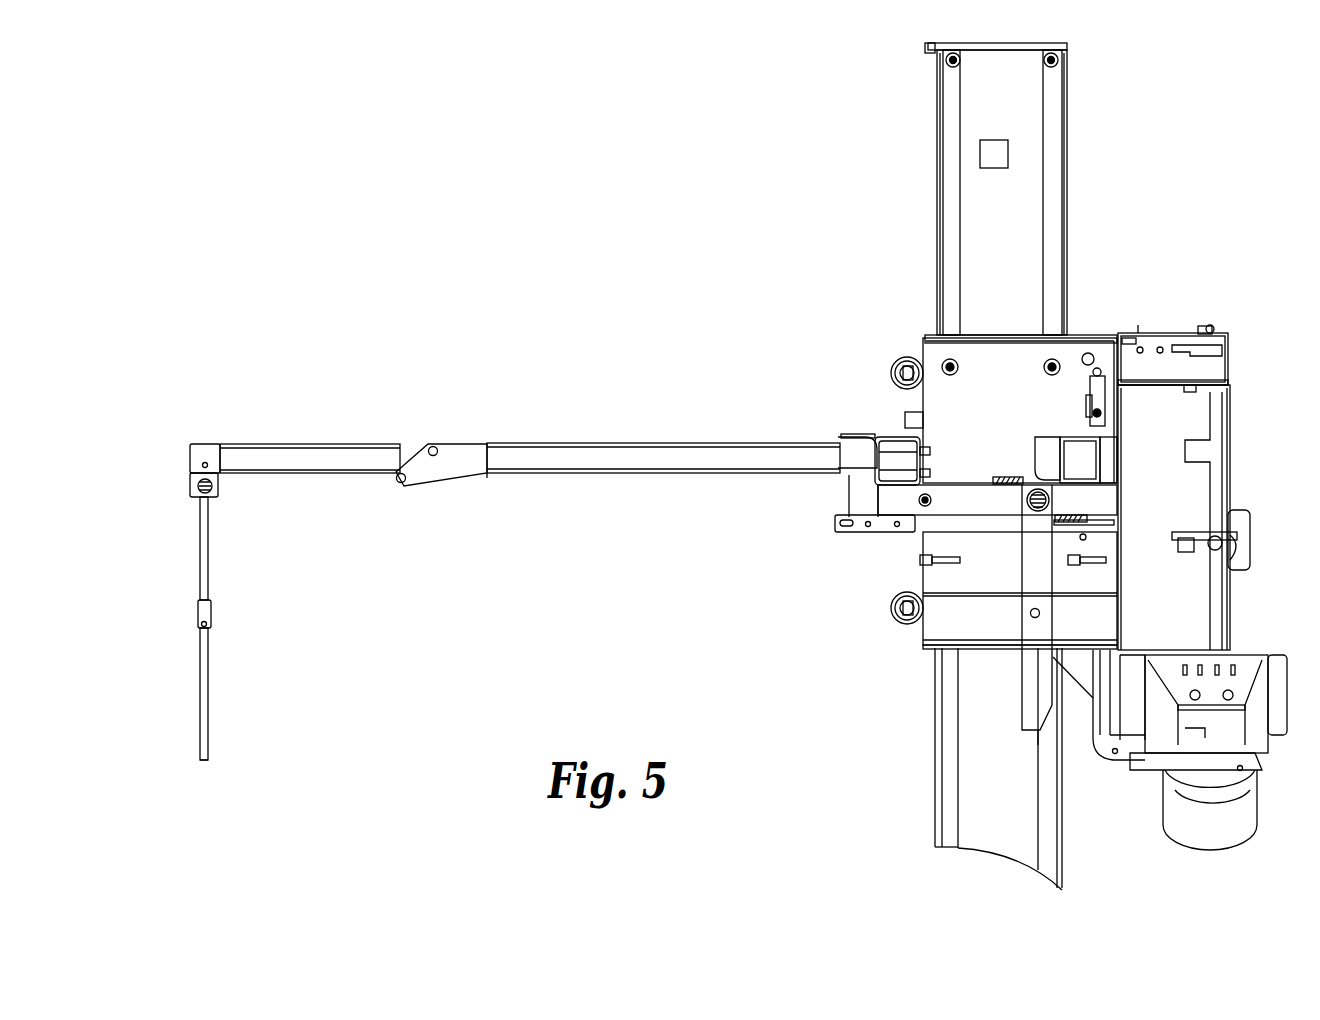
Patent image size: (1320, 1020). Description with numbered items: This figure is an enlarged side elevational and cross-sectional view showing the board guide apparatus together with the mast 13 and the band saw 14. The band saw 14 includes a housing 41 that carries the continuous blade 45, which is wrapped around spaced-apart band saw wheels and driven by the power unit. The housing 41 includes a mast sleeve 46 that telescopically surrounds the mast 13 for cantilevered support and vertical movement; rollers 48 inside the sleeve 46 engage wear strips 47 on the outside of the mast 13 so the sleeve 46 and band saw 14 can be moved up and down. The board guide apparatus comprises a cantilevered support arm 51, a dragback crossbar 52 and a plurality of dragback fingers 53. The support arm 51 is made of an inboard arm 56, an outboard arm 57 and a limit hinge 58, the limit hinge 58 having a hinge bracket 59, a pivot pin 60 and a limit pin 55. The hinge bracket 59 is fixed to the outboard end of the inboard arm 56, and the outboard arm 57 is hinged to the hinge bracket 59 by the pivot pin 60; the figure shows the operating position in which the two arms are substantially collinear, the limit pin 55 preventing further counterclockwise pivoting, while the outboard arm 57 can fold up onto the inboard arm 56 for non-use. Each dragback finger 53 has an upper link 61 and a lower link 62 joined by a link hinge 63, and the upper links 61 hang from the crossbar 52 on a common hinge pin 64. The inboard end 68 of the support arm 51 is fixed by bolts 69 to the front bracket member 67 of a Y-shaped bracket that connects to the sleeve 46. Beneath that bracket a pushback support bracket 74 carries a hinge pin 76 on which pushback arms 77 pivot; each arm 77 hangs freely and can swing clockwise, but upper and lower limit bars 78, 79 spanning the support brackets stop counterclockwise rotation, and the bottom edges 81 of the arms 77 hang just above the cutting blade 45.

The mast 13 is at (1068, 155).
The band saw 14 is at (1232, 340).
The housing 41 is at (1232, 424).
The continuous blade 45 is at (1150, 752).
The mast sleeve 46 is at (1096, 334).
The wear strips 47 is at (1011, 410).
The rollers 48 is at (893, 368).
The cantilevered support arm 51 is at (561, 444).
The dragback crossbar 52 is at (200, 442).
The dragback fingers 53 is at (210, 746).
The limit pin 55 is at (396, 484).
The inboard arm 56 is at (662, 442).
The outboard arm 57 is at (298, 442).
The limit hinge 58 is at (440, 486).
The hinge bracket 59 is at (489, 480).
The pivot pin 60 is at (438, 447).
The upper link 61 is at (200, 545).
The lower link 62 is at (208, 688).
The link hinge 63 is at (212, 612).
The common hinge pin 64 is at (212, 486).
The front bracket member 67 is at (878, 440).
The inboard end 68 is at (840, 476).
The bolts 69 is at (866, 504).
The pushback support bracket 74 is at (890, 520).
The hinge pin 76 is at (1034, 508).
The pushback arms 77 is at (1020, 680).
The upper limit bar 78 is at (1003, 477).
The lower limit bar 79 is at (1090, 522).
The bottom edges 81 is at (1030, 732).